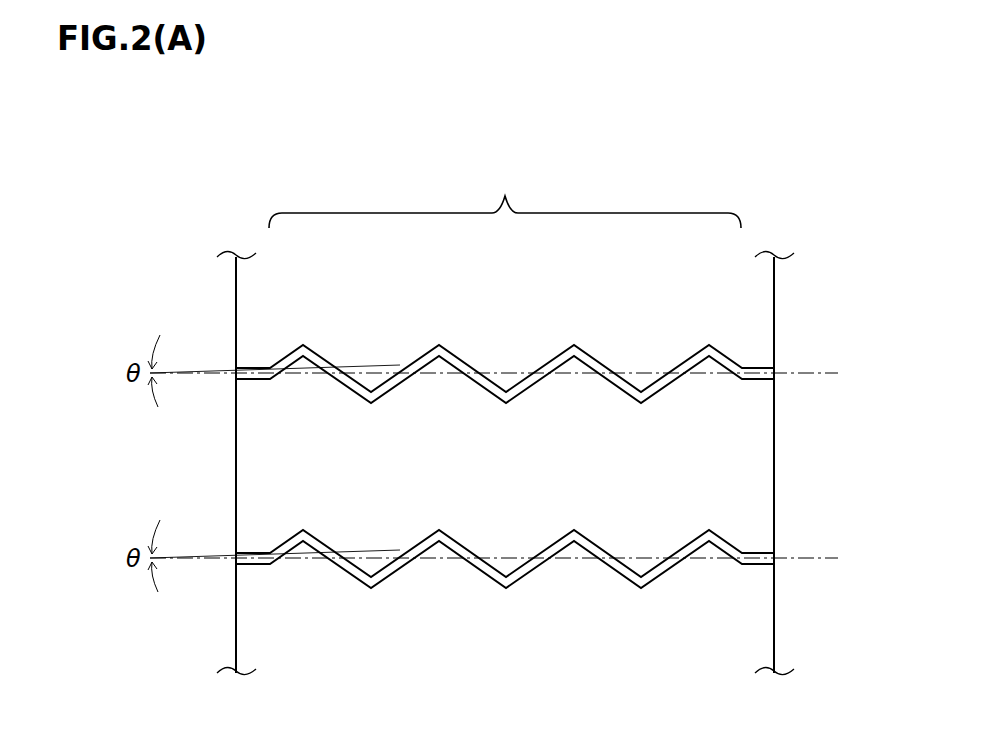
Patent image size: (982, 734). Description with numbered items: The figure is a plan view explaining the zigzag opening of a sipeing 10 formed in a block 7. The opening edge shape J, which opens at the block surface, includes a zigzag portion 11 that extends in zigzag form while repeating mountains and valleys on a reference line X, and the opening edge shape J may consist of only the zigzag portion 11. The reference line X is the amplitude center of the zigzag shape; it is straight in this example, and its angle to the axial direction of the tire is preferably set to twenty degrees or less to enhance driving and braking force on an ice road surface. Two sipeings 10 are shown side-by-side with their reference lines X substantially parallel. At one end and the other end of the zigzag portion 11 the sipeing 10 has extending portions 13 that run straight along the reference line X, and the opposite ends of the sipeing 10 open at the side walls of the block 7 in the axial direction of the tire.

The block 7 is at (737, 292).
The sipeing 10 is at (757, 368).
The zigzag portion 11 is at (505, 198).
The extending portion 13 is at (253, 380).
The reference line X is at (823, 377).
The opening edge shape J is at (347, 575).